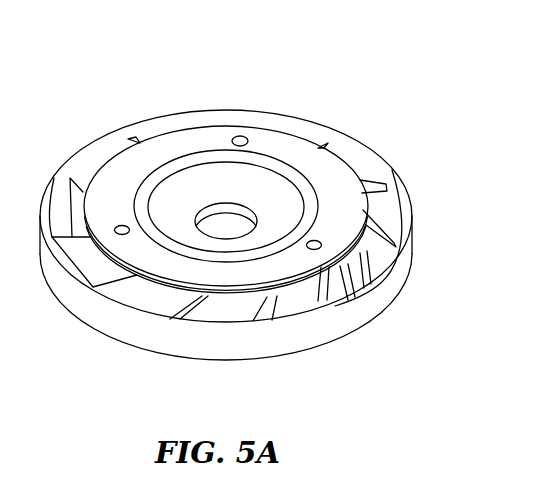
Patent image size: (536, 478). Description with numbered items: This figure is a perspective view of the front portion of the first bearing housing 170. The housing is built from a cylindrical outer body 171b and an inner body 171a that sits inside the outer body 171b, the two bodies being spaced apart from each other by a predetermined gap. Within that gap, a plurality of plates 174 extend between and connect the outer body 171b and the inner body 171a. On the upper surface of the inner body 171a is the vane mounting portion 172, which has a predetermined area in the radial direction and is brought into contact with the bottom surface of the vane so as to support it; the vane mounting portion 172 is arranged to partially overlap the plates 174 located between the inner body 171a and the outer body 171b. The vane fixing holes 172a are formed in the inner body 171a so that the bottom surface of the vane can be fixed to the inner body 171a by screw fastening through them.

The first bearing housing 170 is at (410, 111).
The inner body 171a is at (183, 242).
The outer body 171b is at (342, 320).
The vane mounting portion 172 is at (343, 202).
The vane fixing holes 172a is at (238, 136).
The plates 174 is at (387, 235).